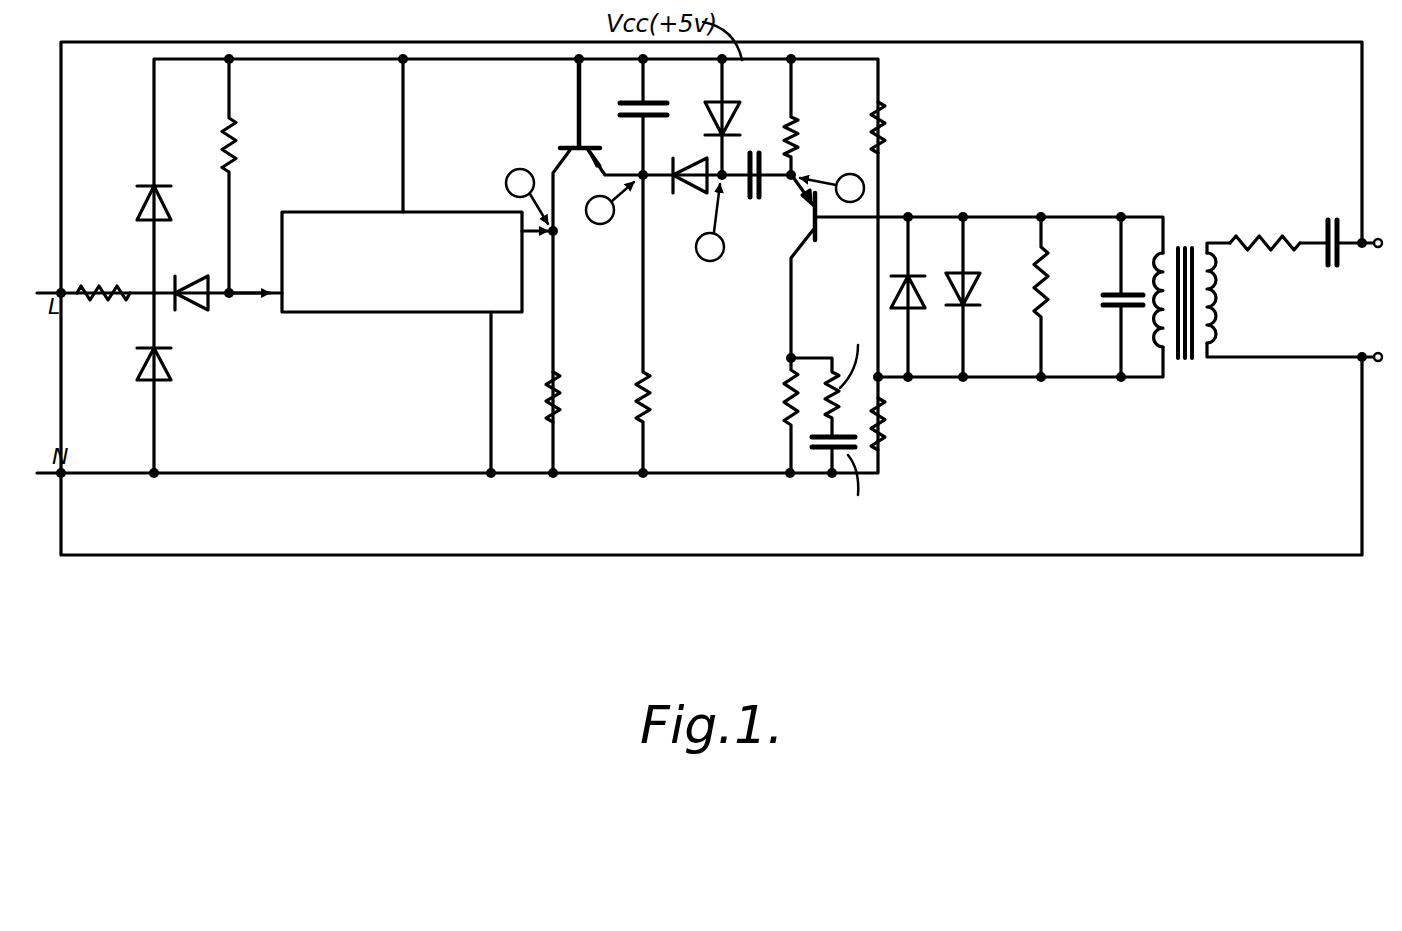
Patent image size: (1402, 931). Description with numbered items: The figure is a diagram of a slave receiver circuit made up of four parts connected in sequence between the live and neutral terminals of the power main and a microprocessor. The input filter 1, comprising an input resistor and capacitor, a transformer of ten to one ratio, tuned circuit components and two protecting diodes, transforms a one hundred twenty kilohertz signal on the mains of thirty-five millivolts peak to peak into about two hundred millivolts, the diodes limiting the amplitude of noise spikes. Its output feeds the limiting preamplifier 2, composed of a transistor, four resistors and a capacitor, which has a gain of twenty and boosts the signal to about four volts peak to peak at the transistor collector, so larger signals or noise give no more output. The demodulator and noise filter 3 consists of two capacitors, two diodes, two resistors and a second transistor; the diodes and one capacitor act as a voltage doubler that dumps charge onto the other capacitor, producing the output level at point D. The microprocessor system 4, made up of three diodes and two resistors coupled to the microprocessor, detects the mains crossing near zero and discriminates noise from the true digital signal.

The input filter 1 is at (1375, 610).
The limiting preamplifier 2 is at (880, 610).
The demodulator and noise filter 3 is at (790, 610).
The microprocessor system 4 is at (487, 610).